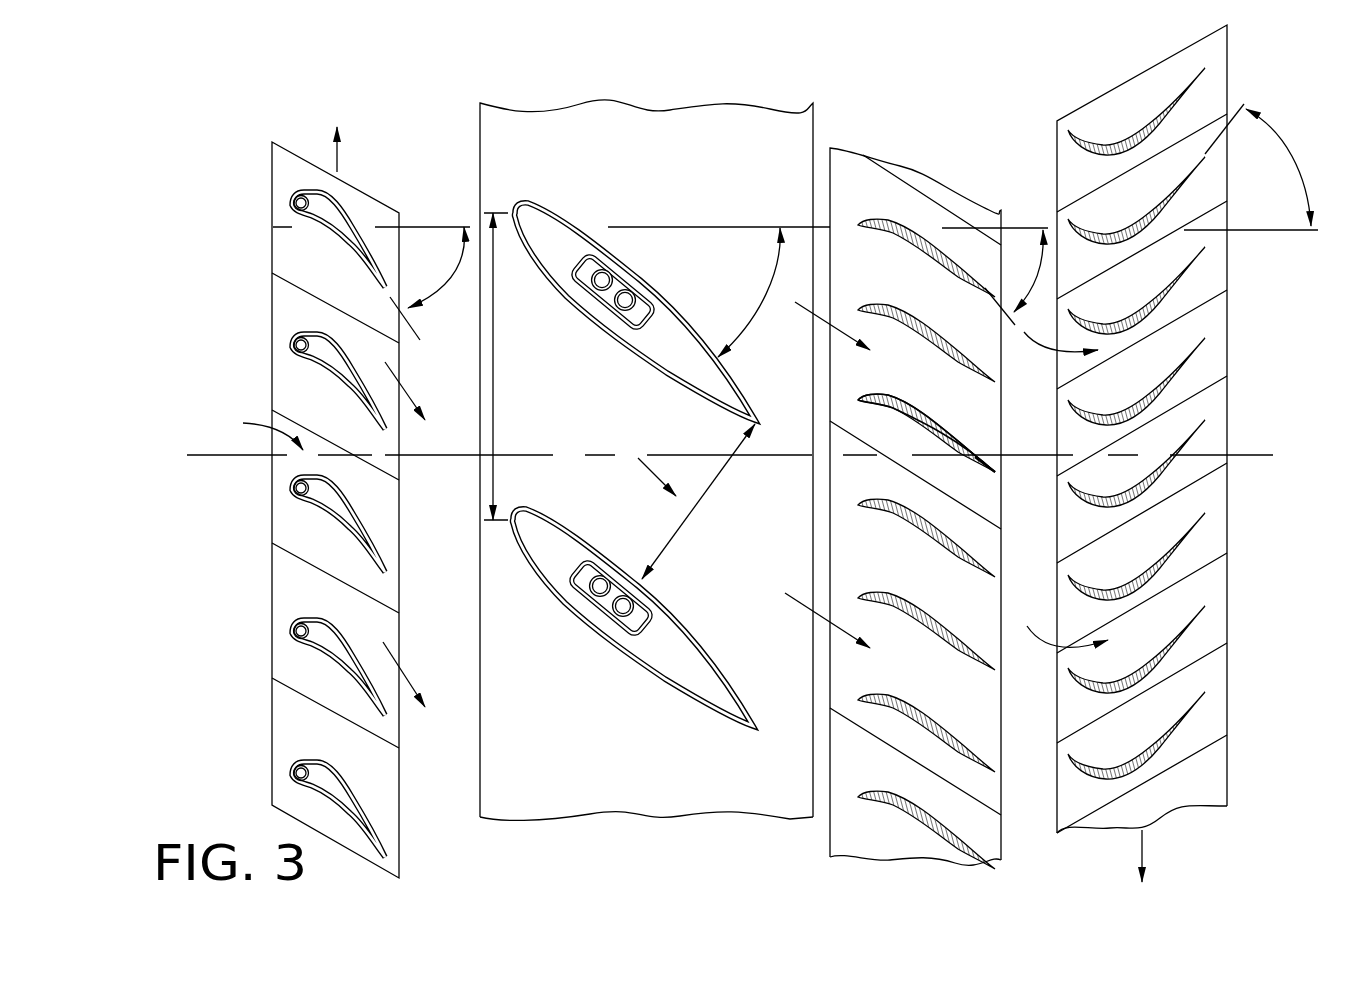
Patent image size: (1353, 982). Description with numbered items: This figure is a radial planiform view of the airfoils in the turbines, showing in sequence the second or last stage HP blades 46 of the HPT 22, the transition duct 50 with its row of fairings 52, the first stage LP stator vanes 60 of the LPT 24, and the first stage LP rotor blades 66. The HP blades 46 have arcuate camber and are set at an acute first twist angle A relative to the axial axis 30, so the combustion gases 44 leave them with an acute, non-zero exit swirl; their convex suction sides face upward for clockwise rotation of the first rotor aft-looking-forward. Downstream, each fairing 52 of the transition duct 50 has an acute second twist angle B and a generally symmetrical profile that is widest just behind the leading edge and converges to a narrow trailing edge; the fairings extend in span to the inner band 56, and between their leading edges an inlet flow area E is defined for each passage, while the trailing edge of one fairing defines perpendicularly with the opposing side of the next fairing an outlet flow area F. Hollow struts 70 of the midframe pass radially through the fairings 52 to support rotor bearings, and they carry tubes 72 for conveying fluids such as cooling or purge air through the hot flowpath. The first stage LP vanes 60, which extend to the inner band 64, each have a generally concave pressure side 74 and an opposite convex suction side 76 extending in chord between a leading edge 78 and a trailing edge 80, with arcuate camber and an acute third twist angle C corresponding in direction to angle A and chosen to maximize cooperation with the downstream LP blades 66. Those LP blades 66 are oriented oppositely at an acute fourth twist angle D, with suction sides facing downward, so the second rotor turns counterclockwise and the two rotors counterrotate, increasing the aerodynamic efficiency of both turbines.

The high pressure turbine 22 is at (342, 495).
The low pressure turbine 24 is at (896, 466).
The axial axis 30 is at (590, 454).
The combustion gases 44 is at (638, 457).
The second stage HP blades 46 is at (318, 340).
The transition duct 50 is at (670, 430).
The fairings 52 is at (633, 604).
The inner band 56 is at (635, 319).
The first stage LP stator vanes 60 is at (892, 222).
The inner band 64 is at (896, 515).
The first stage LP rotor blades 66 is at (1107, 140).
The hollow struts 70 is at (580, 570).
The tubes 72 is at (618, 308).
The pressure side 74 is at (897, 398).
The suction side 76 is at (897, 398).
The leading edge 78 is at (872, 395).
The trailing edge 80 is at (975, 462).
The first twist angle A is at (456, 296).
The second twist angle B is at (772, 300).
The third twist angle C is at (1028, 268).
The fourth twist angle D is at (1282, 140).
The inlet flow area E is at (495, 371).
The outlet flow area F is at (695, 503).